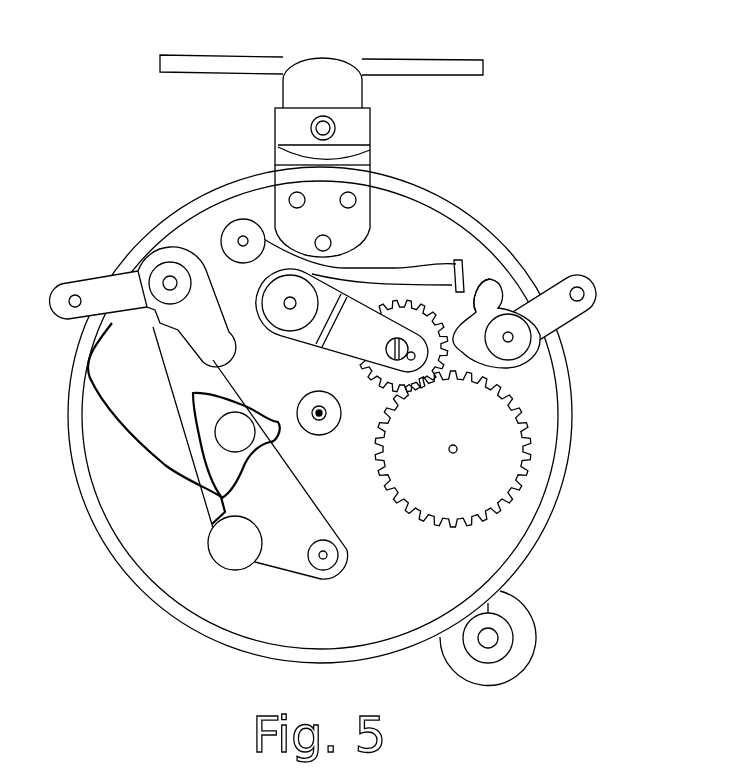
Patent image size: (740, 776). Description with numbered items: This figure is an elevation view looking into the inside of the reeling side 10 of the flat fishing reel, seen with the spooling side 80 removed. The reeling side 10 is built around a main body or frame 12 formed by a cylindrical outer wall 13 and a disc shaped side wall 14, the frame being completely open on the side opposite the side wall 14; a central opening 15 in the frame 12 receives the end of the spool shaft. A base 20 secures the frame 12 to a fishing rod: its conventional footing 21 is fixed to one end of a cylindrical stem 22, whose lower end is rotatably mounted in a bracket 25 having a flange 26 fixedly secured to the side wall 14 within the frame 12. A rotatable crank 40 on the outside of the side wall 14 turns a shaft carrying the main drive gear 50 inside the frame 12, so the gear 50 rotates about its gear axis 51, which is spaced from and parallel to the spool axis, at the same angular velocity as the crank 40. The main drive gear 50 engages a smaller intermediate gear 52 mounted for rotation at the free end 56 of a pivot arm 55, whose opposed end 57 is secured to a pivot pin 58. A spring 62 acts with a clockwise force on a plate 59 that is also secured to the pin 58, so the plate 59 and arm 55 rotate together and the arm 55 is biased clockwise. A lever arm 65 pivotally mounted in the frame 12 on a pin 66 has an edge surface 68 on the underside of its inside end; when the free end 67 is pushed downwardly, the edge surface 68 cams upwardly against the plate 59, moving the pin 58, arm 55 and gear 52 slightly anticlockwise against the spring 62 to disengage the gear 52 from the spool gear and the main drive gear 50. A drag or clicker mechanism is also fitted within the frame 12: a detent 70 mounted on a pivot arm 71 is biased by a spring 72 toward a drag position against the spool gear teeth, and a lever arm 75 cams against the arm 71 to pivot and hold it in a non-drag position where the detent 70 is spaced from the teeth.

The reeling side 10 is at (337, 349).
The main body or frame 12 is at (320, 414).
The cylindrical outer wall 13 is at (148, 589).
The disc shaped side wall 14 is at (218, 615).
The central opening 15 is at (307, 428).
The base 20 is at (316, 135).
The footing 21 is at (418, 60).
The cylindrical stem 22 is at (287, 87).
The bracket 25 is at (367, 118).
The flange 26 is at (350, 221).
The crank 40 is at (517, 622).
The main drive gear 50 is at (453, 469).
The gear axis 51 is at (449, 448).
The intermediate gear 52 is at (362, 365).
The pivot arm 55 is at (326, 324).
The free end 56 is at (383, 397).
The opposed end 57 is at (260, 281).
The pivot pin 58 is at (281, 306).
The plate 59 is at (482, 293).
The spring 62 is at (391, 267).
The lever arm 65 is at (583, 315).
The pin 66 is at (496, 317).
The free end 67 is at (590, 285).
The edge surface 68 is at (468, 318).
The detent 70 is at (271, 418).
The pivot arm 71 is at (172, 382).
The spring 72 is at (143, 450).
The lever arm 75 is at (55, 317).
The spooling side 80 is at (180, 362).